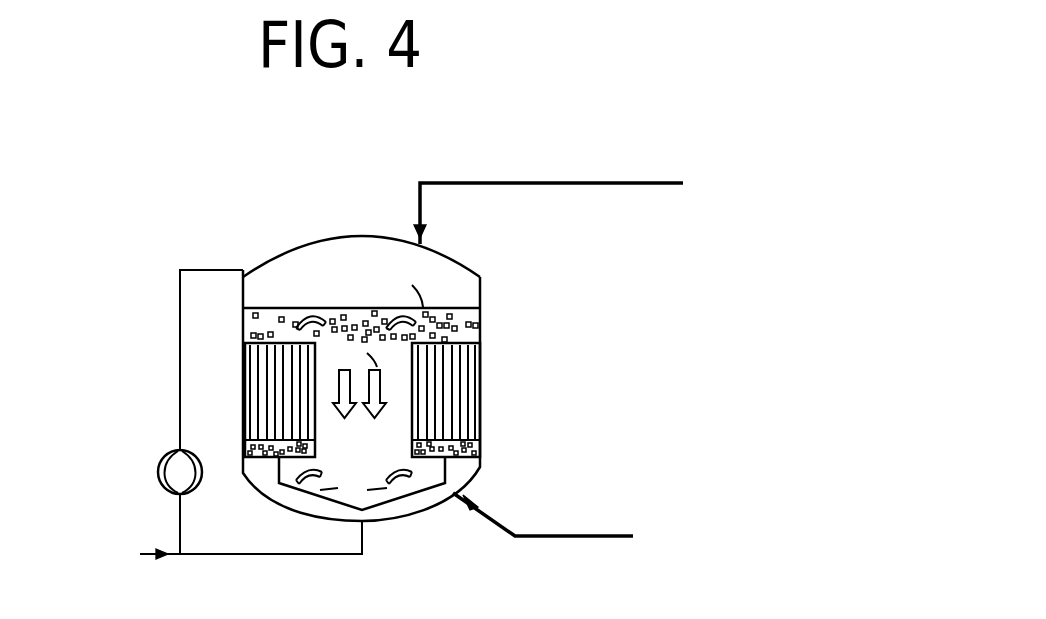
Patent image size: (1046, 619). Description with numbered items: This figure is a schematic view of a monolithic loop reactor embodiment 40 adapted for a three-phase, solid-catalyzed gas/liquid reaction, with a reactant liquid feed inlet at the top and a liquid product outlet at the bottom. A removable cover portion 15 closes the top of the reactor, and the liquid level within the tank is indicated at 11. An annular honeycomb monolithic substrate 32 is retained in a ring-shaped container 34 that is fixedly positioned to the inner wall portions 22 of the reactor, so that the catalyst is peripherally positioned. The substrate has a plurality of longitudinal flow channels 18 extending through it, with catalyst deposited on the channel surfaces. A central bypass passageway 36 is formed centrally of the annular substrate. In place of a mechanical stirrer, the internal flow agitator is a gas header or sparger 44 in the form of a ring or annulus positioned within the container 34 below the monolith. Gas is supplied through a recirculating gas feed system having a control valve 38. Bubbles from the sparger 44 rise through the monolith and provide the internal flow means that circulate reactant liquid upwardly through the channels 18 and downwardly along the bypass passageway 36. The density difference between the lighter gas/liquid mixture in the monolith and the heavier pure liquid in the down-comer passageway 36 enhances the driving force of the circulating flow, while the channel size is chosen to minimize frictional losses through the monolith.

The monolithic loop reactor embodiment 40 is at (256, 240).
The removable cover portion 15 is at (348, 235).
The liquid level 11 is at (370, 307).
The annular honeycomb monolithic substrate 32 is at (450, 342).
The inner wall portions 22 is at (247, 353).
The longitudinal flow channels 18 is at (457, 383).
The central bypass passageway 36 is at (330, 398).
The annular container 34 is at (410, 425).
The gas header or sparger 44 is at (277, 459).
The control valve 38 is at (158, 472).